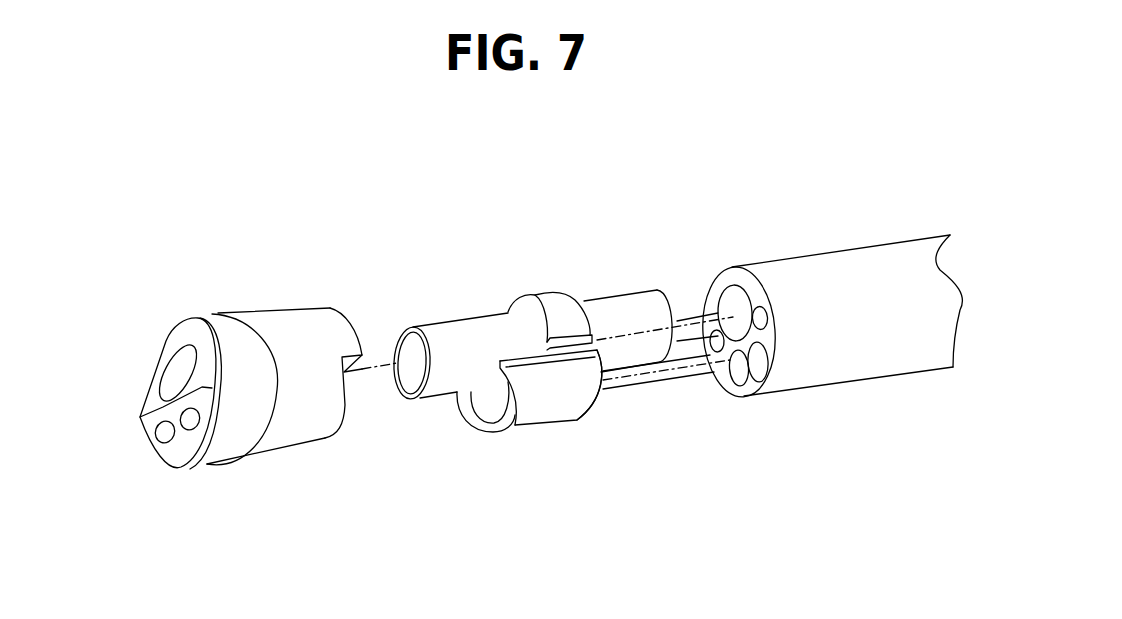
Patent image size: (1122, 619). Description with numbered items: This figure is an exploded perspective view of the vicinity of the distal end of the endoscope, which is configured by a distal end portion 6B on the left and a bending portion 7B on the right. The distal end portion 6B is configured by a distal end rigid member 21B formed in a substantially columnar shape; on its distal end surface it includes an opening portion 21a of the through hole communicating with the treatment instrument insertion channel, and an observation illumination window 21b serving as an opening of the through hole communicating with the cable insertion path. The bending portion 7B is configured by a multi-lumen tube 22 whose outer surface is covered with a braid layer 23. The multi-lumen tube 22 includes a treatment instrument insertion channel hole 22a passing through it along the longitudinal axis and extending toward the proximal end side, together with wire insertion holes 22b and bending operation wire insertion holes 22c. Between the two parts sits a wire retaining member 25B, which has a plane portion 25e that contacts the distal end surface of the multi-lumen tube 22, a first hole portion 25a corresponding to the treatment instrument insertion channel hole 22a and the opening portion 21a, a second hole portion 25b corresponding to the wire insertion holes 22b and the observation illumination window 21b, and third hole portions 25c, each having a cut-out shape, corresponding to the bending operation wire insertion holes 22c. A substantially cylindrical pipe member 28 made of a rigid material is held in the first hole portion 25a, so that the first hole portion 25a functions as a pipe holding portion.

The distal end portion 6B is at (363, 252).
The bending portion 7B is at (963, 152).
The distal end rigid member 21B is at (287, 417).
The opening portion 21a is at (176, 376).
The observation illumination window 21b is at (187, 425).
The pipe member 28 is at (445, 375).
The wire retaining member 25B is at (550, 395).
The first hole portion 25a is at (530, 311).
The second hole portion 25b is at (492, 413).
The third hole portions 25c is at (604, 337).
The plane portion 25e is at (599, 400).
The multi-lumen tube 22 is at (817, 349).
The braid layer 23 is at (827, 347).
The treatment instrument insertion channel hole 22a is at (721, 304).
The wire insertion holes 22b is at (764, 375).
The bending operation wire insertion holes 22c is at (759, 326).